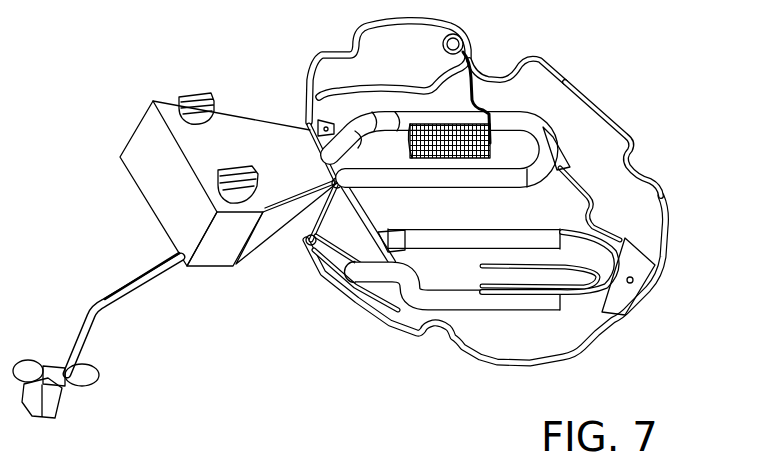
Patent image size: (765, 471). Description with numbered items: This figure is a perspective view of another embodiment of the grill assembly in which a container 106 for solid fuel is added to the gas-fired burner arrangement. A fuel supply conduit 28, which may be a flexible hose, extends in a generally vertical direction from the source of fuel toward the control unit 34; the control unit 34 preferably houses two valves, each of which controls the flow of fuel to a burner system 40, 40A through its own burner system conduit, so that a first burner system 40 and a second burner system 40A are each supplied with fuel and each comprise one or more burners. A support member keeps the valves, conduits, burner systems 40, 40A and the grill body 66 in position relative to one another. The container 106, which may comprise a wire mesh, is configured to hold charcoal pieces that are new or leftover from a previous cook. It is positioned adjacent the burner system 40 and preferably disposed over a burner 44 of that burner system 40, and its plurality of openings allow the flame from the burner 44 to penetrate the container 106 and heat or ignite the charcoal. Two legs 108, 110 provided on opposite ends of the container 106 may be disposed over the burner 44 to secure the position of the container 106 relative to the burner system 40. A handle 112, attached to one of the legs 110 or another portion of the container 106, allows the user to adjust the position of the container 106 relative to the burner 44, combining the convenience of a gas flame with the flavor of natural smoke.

The fuel supply conduit 28 is at (122, 295).
The control unit 34 is at (140, 150).
The burner system 40 is at (505, 122).
The second burner system 40A is at (592, 250).
The burner 44 is at (482, 178).
The grill body 66 is at (630, 125).
The container 106 is at (532, 80).
The leg 108 is at (428, 185).
The leg 110 is at (555, 172).
The handle 112 is at (463, 50).